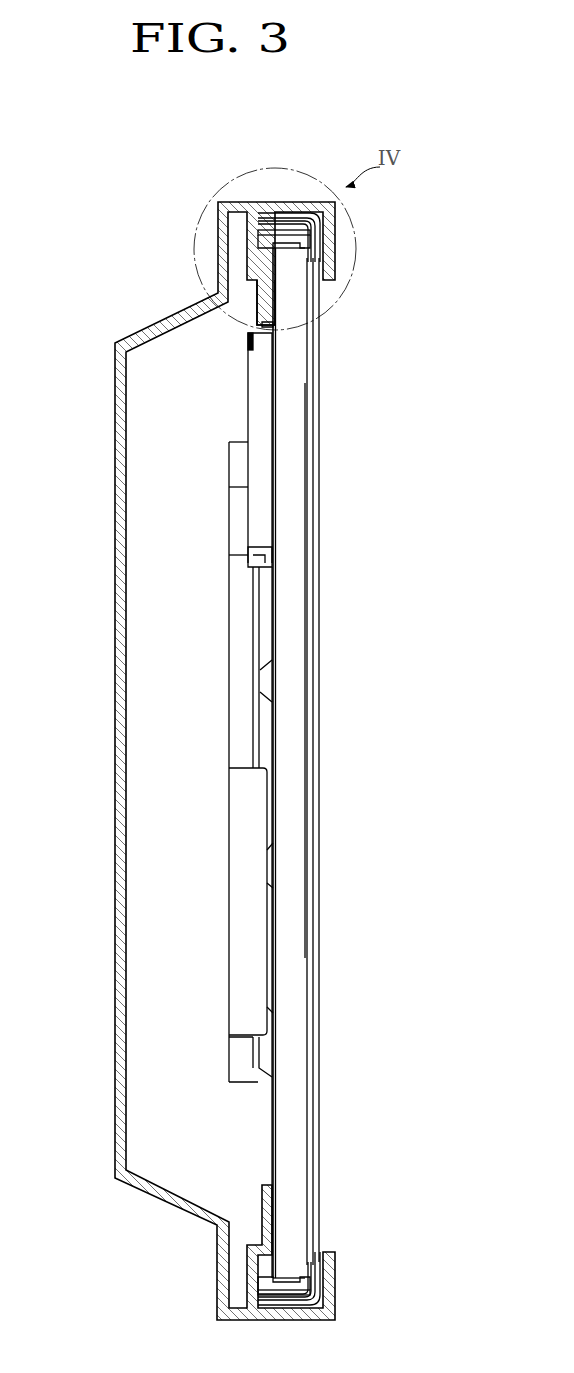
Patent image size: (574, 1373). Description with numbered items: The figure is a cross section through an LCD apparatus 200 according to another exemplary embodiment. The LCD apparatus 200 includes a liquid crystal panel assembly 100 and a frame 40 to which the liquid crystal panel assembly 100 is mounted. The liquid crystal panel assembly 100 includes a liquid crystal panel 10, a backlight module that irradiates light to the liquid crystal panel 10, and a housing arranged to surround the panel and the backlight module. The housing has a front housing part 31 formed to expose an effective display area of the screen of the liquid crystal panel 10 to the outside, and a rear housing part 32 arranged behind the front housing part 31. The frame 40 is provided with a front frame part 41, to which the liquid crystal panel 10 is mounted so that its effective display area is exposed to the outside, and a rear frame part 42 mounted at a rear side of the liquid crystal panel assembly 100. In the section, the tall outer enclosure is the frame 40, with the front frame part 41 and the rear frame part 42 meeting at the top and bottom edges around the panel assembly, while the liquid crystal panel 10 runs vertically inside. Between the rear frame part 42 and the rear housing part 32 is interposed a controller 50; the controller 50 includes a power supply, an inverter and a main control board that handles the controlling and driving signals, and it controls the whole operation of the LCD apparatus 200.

The LCD apparatus 200 is at (78, 244).
The liquid crystal panel assembly 100 is at (342, 763).
The liquid crystal panel 10 is at (318, 632).
The controller 50 is at (193, 644).
The frame 40 is at (277, 699).
The front frame part 41 is at (316, 204).
The rear frame part 42 is at (234, 204).
The front housing part 31 is at (323, 230).
The rear housing part 32 is at (258, 262).